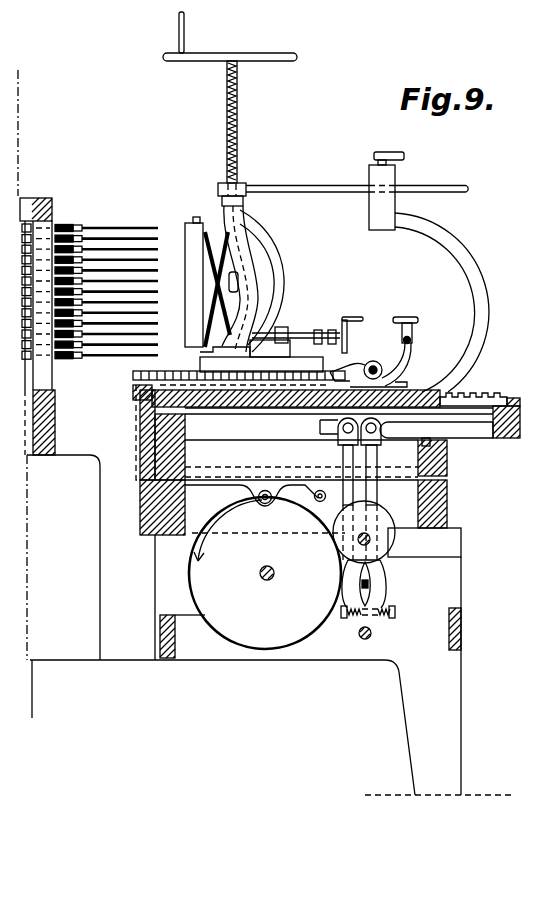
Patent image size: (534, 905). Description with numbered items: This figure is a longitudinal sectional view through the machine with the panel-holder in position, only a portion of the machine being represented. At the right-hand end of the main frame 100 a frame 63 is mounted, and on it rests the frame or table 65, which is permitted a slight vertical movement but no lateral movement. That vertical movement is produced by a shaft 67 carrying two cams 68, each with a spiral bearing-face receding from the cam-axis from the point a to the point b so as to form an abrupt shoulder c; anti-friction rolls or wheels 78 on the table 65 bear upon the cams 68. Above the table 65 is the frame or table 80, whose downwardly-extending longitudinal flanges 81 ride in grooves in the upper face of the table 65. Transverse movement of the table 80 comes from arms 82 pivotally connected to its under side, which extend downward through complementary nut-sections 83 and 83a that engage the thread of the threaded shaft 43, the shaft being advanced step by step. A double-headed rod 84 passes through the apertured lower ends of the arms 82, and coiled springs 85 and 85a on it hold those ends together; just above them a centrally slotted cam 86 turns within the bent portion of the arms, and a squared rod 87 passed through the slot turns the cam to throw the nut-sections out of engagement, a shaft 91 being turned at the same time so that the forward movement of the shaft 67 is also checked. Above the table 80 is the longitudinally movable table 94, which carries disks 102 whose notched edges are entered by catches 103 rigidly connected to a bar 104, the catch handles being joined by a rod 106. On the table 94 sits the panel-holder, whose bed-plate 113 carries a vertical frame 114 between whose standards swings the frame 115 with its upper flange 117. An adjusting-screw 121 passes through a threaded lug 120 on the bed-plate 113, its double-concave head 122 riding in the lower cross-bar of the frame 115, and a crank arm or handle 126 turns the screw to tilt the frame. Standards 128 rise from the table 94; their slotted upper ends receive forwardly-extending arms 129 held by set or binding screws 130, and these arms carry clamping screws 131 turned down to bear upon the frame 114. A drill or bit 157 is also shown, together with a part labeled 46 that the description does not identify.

The clamping screws 131 is at (230, 109).
The set or binding screws 130 is at (374, 157).
The forwardly-extending arms 129 is at (334, 192).
The standards 128 is at (446, 247).
The drill or bit 157 is at (137, 229).
The upper flange 117 is at (194, 221).
The vertical frame 114 is at (244, 214).
The swinging frame 115 is at (270, 265).
The apertured and threaded lug 120 is at (282, 326).
The adjusting-screw 121 is at (296, 332).
The crank arms or handles 126 is at (347, 318).
The rod 106 is at (414, 342).
The catches 103 is at (394, 365).
The bar 104 is at (388, 377).
The table 94 is at (426, 392).
The bed-plate 113 is at (286, 351).
The slide 46 is at (206, 359).
The head 122 is at (261, 363).
The disks 102 is at (133, 376).
The downwardly-extending longitudinal flanges 81 is at (426, 433).
The frame or table 80 is at (450, 424).
The frame or table 65 is at (449, 462).
The frame 63 is at (449, 508).
The arms 82 is at (380, 492).
The nut-section 83a is at (394, 545).
The nut-section 83 is at (334, 548).
The threaded shaft 43 is at (332, 540).
The anti-friction rolls or wheels 78 is at (263, 504).
The shaft 91 is at (313, 496).
The cams 68 is at (188, 575).
The shaft 67 is at (272, 578).
The cam 86 is at (384, 570).
The squared or irregularly-formed rod 87 is at (374, 592).
The coiled spring 85a is at (389, 636).
The double-headed rod 84 is at (342, 619).
The coiled spring 85 is at (350, 620).
The frame 100 is at (272, 676).